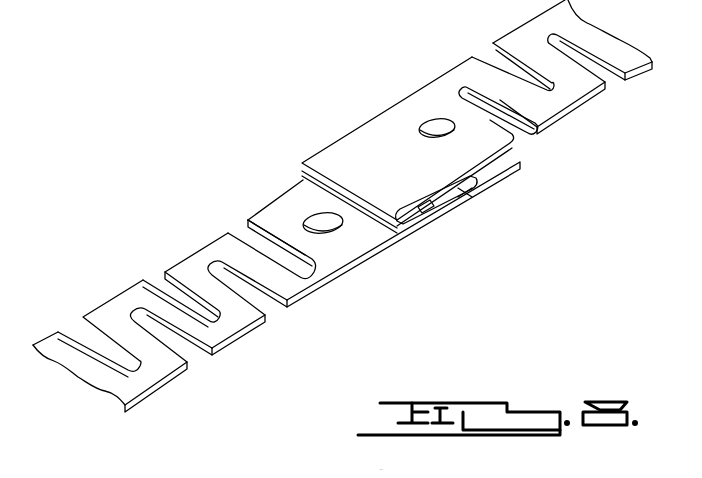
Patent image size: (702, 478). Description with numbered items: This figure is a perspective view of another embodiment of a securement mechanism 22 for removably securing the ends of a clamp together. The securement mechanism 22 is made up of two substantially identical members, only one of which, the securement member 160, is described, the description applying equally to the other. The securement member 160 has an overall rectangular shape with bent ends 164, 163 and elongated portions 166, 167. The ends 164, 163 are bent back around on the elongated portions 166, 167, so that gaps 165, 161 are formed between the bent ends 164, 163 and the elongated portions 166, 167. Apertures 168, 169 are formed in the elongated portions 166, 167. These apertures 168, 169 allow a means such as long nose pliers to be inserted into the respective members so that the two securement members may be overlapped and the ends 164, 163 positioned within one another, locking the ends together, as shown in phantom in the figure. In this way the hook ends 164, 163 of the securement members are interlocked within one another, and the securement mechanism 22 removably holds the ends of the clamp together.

The securement mechanism 22 is at (361, 100).
The securement member 160 is at (381, 274).
The gap 161 is at (408, 221).
The bent end 163 is at (425, 222).
The bent end 164 is at (473, 196).
The gap 165 is at (470, 201).
The elongated portion 166 is at (268, 212).
The elongated portion 167 is at (330, 147).
The aperture 168 is at (325, 231).
The aperture 169 is at (440, 128).